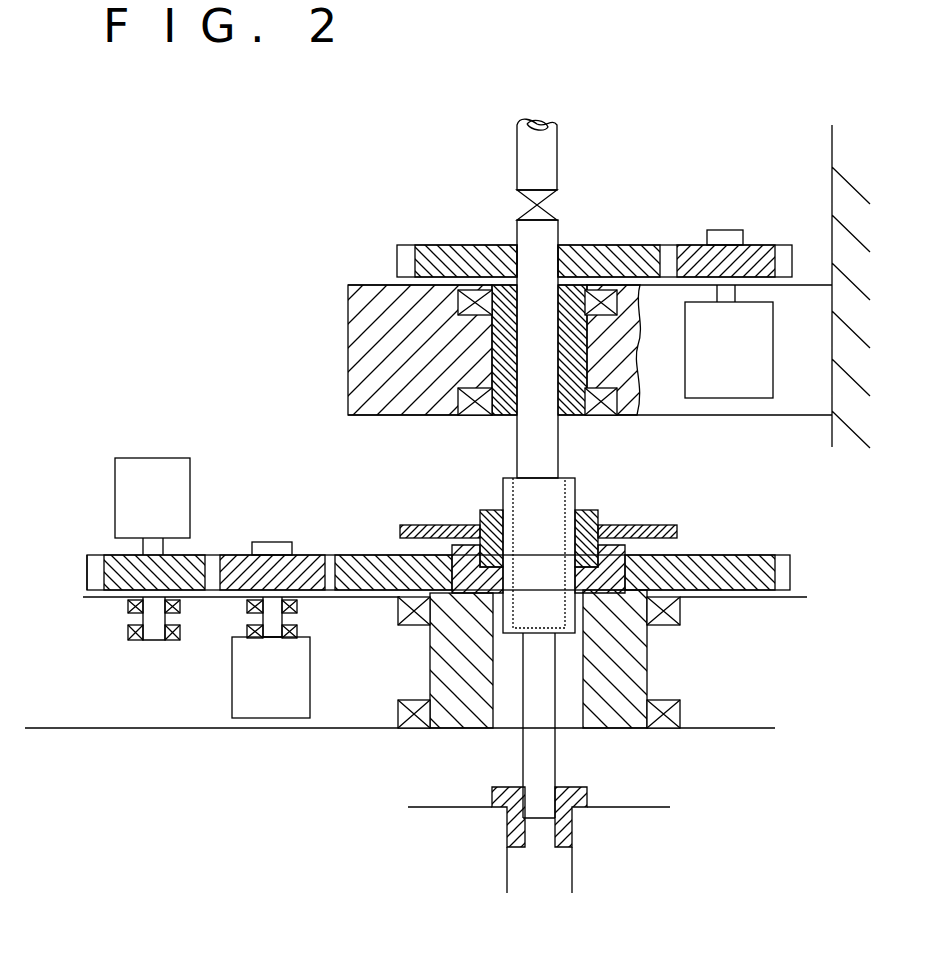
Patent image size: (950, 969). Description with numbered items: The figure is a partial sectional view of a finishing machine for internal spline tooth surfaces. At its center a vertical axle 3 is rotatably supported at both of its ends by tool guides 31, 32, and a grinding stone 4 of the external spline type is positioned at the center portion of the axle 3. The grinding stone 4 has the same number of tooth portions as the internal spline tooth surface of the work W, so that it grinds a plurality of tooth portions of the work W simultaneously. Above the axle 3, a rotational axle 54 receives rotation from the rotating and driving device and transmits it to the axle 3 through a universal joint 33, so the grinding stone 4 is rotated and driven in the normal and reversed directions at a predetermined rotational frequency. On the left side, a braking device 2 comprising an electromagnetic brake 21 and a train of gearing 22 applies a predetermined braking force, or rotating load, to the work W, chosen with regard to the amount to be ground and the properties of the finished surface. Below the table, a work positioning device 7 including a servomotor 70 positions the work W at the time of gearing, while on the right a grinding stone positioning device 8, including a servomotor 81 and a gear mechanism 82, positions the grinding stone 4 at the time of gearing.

The braking device 2 is at (93, 500).
The electromagnetic brake 21 is at (160, 470).
The train of gearing 22 is at (212, 609).
The axle 3 is at (533, 440).
The tool guide 31 is at (512, 830).
The tool guide 32 is at (568, 405).
The universal joint 33 is at (515, 200).
The grinding stone 4 is at (503, 490).
The rotational axle 54 is at (530, 162).
The work positioning device 7 is at (328, 674).
The servomotor 70 is at (268, 700).
The grinding stone positioning device 8 is at (669, 405).
The servomotor 81 is at (748, 380).
The gear mechanism 82 is at (635, 241).
The work W is at (480, 527).